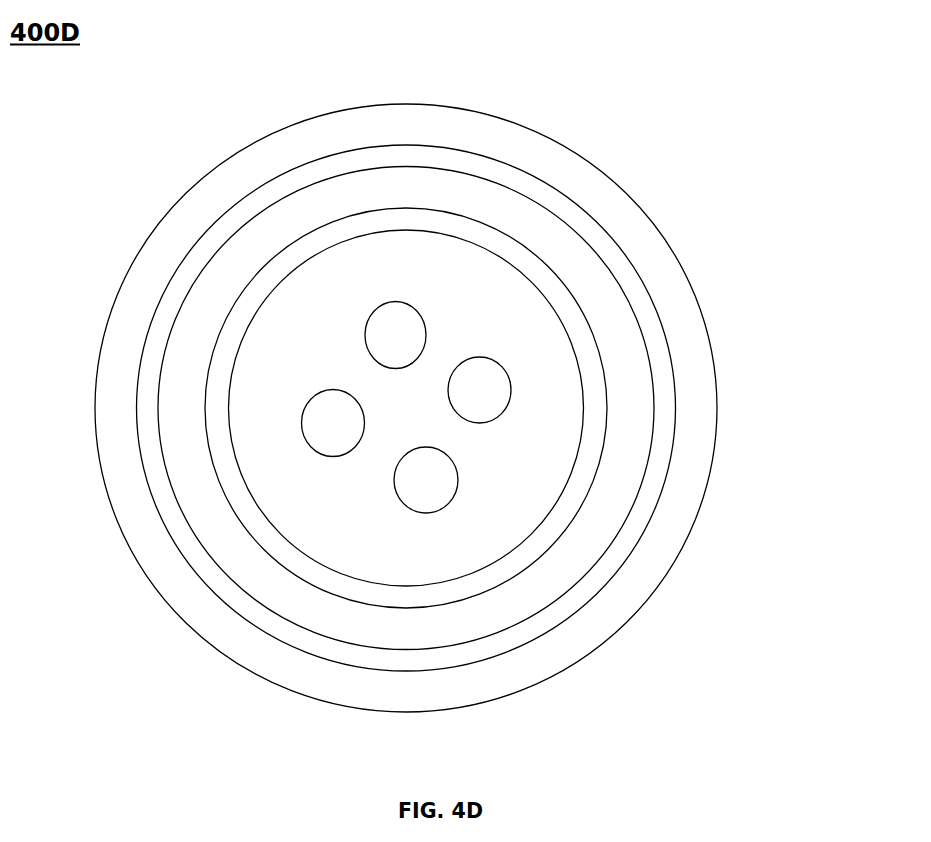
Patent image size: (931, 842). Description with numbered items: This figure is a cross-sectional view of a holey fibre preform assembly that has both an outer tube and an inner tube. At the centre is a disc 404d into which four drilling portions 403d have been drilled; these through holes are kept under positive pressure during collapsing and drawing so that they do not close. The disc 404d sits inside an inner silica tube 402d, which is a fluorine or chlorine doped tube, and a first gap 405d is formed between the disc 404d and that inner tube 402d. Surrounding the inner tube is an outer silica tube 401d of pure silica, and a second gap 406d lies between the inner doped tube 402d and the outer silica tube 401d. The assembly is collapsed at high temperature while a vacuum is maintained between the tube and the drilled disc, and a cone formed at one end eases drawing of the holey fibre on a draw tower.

The outer silica tube 401d is at (437, 132).
The inner silica tube 402d is at (475, 200).
The drilling portions 403d is at (424, 318).
The disc 404d is at (545, 383).
The first gap 405d is at (595, 435).
The second gap 406d is at (635, 528).